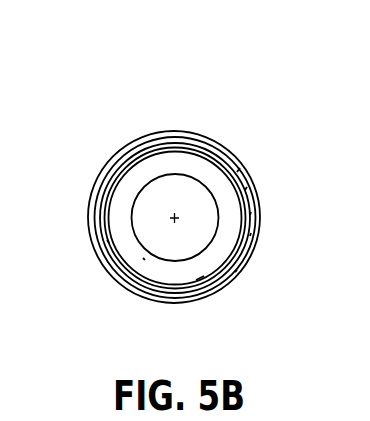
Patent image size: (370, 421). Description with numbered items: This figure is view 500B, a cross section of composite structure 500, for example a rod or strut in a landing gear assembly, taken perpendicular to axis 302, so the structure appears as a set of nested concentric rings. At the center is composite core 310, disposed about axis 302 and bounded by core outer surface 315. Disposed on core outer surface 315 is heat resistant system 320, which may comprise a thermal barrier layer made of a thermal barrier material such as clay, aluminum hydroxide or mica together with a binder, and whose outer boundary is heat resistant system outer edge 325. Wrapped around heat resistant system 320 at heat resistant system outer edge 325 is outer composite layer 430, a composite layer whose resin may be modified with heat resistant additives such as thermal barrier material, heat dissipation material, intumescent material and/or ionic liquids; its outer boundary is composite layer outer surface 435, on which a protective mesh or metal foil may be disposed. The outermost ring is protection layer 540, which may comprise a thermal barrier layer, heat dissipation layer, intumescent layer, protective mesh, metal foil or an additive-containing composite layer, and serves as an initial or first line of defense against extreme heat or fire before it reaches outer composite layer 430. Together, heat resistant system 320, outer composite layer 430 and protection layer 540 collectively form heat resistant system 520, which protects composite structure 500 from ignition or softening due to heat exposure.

The composite structure 500 is at (132, 120).
The view 500B is at (222, 113).
The axis 302 is at (173, 217).
The composite core 310 is at (143, 258).
The core outer surface 315 is at (107, 240).
The heat resistant system 320 is at (237, 172).
The heat resistant system outer edge 325 is at (246, 191).
The outer composite layer 430 is at (251, 215).
The composite layer outer surface 435 is at (250, 236).
The heat resistant system 520 is at (202, 278).
The protection layer 540 is at (236, 273).